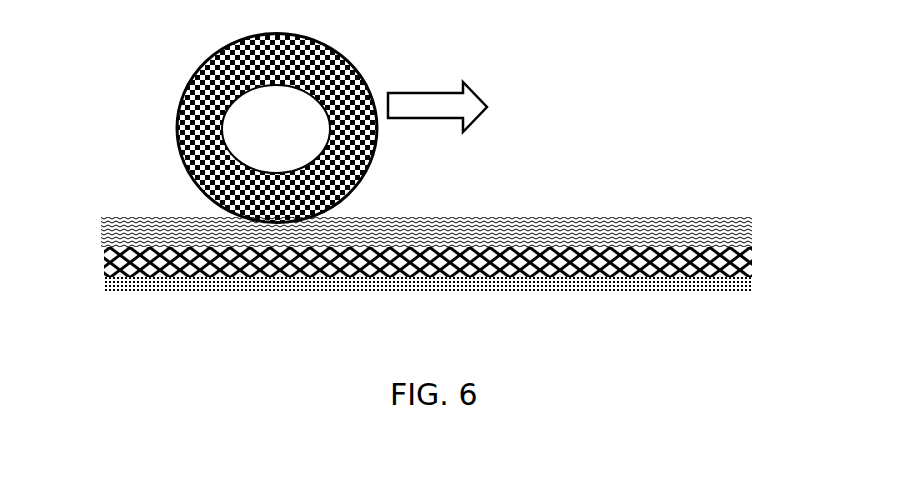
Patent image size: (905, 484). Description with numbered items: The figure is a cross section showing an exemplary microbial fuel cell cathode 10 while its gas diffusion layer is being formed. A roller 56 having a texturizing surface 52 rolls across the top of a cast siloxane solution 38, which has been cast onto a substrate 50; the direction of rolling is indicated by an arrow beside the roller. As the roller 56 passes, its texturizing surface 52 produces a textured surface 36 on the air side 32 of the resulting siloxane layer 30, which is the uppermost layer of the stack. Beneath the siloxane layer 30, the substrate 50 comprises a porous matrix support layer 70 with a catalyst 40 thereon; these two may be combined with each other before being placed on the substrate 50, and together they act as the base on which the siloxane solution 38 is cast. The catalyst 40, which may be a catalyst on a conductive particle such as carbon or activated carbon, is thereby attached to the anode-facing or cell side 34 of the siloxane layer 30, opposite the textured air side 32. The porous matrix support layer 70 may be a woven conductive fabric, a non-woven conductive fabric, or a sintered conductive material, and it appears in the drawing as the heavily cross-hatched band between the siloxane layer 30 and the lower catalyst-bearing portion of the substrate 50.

The microbial fuel cell cathode 10 is at (436, 227).
The siloxane layer 30 is at (407, 185).
The air side 32 is at (407, 185).
The anode-facing side 34 is at (103, 276).
The textured surface 36 is at (563, 223).
The cast siloxane solution 38 is at (407, 183).
The catalyst 40 is at (467, 303).
The substrate 50 is at (693, 288).
The texturizing surface 52 is at (294, 116).
The roller 56 is at (322, 48).
The porous matrix support layer 70 is at (429, 272).